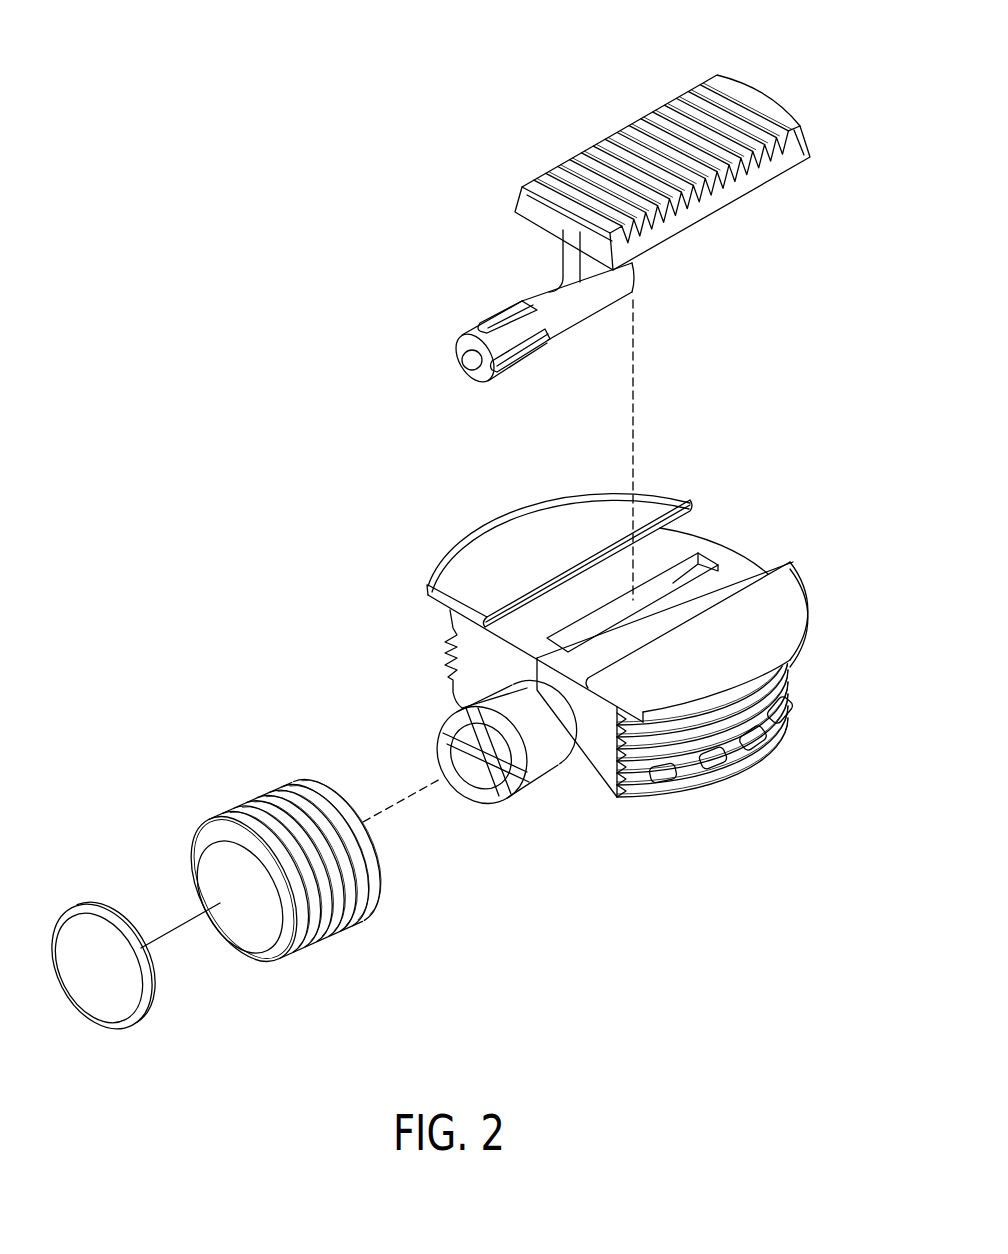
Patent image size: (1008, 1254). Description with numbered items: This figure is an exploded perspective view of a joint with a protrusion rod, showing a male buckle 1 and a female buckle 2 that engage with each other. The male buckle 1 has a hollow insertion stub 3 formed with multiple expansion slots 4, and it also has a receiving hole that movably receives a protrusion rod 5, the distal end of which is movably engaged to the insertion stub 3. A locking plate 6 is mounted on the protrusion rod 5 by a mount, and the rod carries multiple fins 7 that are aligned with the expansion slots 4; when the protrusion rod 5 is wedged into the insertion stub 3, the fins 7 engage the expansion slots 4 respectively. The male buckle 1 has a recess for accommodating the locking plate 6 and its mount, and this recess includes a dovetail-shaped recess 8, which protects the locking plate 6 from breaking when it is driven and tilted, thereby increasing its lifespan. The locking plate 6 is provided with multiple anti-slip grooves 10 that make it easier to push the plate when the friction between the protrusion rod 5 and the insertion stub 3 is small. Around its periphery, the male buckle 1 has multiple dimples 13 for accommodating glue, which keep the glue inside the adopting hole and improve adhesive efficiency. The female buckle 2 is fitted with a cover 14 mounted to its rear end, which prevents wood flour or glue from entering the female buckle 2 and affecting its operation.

The male buckle 1 is at (685, 842).
The female buckle 2 is at (363, 948).
The insertion stub 3 is at (520, 815).
The expansion slots 4 is at (467, 735).
The protrusion rod 5 is at (546, 292).
The locking plate 6 is at (553, 112).
The fins 7 is at (495, 318).
The dovetail-shaped recess 8 is at (737, 575).
The anti-slip grooves 10 is at (663, 137).
The dimples 13 is at (760, 737).
The cover 14 is at (90, 950).